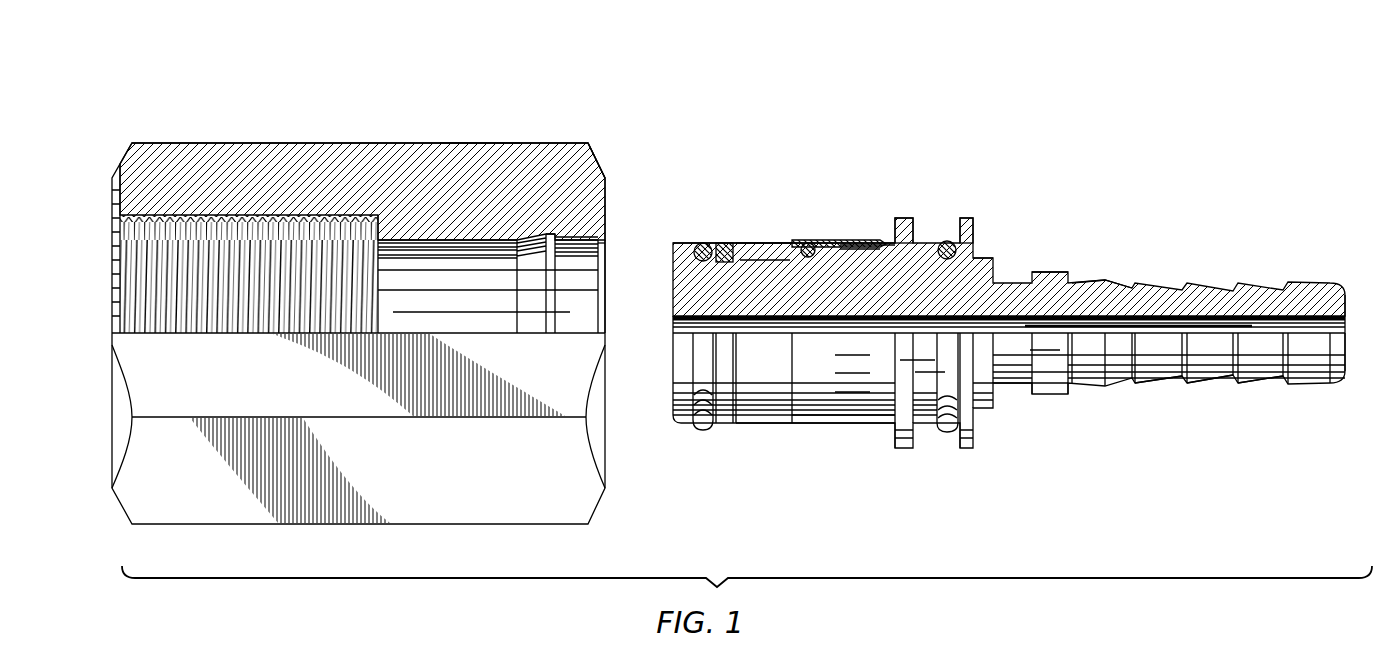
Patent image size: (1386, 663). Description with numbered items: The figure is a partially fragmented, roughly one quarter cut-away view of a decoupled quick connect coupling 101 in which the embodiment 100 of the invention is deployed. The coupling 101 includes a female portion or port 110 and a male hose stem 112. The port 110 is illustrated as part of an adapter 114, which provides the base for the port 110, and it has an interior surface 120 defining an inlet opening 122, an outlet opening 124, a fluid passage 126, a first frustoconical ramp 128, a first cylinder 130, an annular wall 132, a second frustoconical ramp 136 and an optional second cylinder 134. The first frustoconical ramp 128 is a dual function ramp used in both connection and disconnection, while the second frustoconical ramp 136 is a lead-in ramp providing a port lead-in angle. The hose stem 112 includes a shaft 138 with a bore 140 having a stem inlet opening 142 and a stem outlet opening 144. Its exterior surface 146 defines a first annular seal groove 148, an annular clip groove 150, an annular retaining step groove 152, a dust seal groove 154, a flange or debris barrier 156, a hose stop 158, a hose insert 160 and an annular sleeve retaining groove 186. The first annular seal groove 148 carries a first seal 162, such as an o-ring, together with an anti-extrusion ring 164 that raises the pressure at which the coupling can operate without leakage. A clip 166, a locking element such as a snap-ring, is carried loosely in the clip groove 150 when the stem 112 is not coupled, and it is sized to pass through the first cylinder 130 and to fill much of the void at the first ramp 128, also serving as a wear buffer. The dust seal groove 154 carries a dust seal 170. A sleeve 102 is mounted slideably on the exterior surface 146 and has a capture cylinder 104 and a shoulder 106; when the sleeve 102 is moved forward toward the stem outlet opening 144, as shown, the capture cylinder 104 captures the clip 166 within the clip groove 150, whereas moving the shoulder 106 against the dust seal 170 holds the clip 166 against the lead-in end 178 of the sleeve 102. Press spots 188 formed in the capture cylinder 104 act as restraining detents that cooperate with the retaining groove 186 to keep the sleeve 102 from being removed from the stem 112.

The embodiment 100 is at (930, 110).
The quick connect coupling 101 is at (657, 118).
The sleeve 102 is at (838, 225).
The capture cylinder 104 is at (855, 420).
The shoulder 106 is at (906, 218).
The port 110 is at (625, 212).
The hose stem 112 is at (1047, 456).
The adapter 114 is at (100, 190).
The interior surface 120 is at (375, 236).
The inlet opening 122 is at (610, 295).
The outlet opening 124 is at (375, 317).
The fluid passage 126 is at (393, 248).
The first frustoconical ramp 128 is at (476, 165).
The first cylinder 130 is at (588, 143).
The annular wall 132 is at (566, 236).
The second cylinder 134 is at (542, 238).
The second frustoconical ramp 136 is at (576, 237).
The shaft 138 is at (1108, 296).
The bore 140 is at (1193, 318).
The stem inlet opening 142 is at (1347, 324).
The stem outlet opening 144 is at (665, 336).
The exterior surface 146 is at (770, 425).
The first annular seal groove 148 is at (748, 250).
The annular clip groove 150 is at (765, 250).
The annular retaining step groove 152 is at (803, 249).
The dust seal groove 154 is at (988, 262).
The debris barrier 156 is at (973, 233).
The hose stop 158 is at (1068, 282).
The hose insert 160 is at (1245, 438).
The first seal 162 is at (700, 245).
The anti-extrusion ring 164 is at (727, 243).
The clip 166 is at (815, 243).
The dust seal 170 is at (947, 243).
The lead-in end 178 is at (790, 430).
The annular sleeve retaining groove 186 is at (876, 245).
The press spots 188 is at (850, 247).